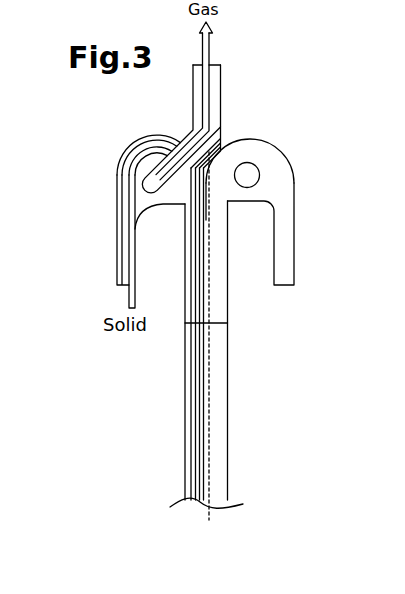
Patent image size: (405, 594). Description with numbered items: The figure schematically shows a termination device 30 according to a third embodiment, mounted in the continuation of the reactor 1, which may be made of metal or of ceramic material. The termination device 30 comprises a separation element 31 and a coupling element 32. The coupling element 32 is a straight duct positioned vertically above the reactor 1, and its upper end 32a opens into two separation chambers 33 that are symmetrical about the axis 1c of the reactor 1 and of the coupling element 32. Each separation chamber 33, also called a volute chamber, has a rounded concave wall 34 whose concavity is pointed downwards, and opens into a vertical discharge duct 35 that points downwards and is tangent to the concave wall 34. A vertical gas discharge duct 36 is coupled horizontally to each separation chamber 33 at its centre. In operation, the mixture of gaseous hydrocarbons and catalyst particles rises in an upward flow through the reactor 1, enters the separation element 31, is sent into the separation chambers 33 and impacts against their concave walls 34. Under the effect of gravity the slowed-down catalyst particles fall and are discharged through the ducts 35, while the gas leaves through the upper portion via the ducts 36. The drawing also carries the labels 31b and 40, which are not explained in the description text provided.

The reactor 1 is at (185, 420).
The axis 1c is at (210, 445).
The termination device 30 is at (121, 349).
The separation element 31 is at (218, 201).
The holder boundary 31b is at (210, 311).
The coupling element 32 is at (228, 292).
The upper end of the coupling element 32a is at (213, 226).
The separation chamber 33 is at (140, 221).
The rounded concave wall 34 is at (117, 184).
The vertical discharge duct 35 is at (117, 259).
The vertical gas discharge duct 36 is at (213, 83).
The drying unit 40 is at (399, 325).